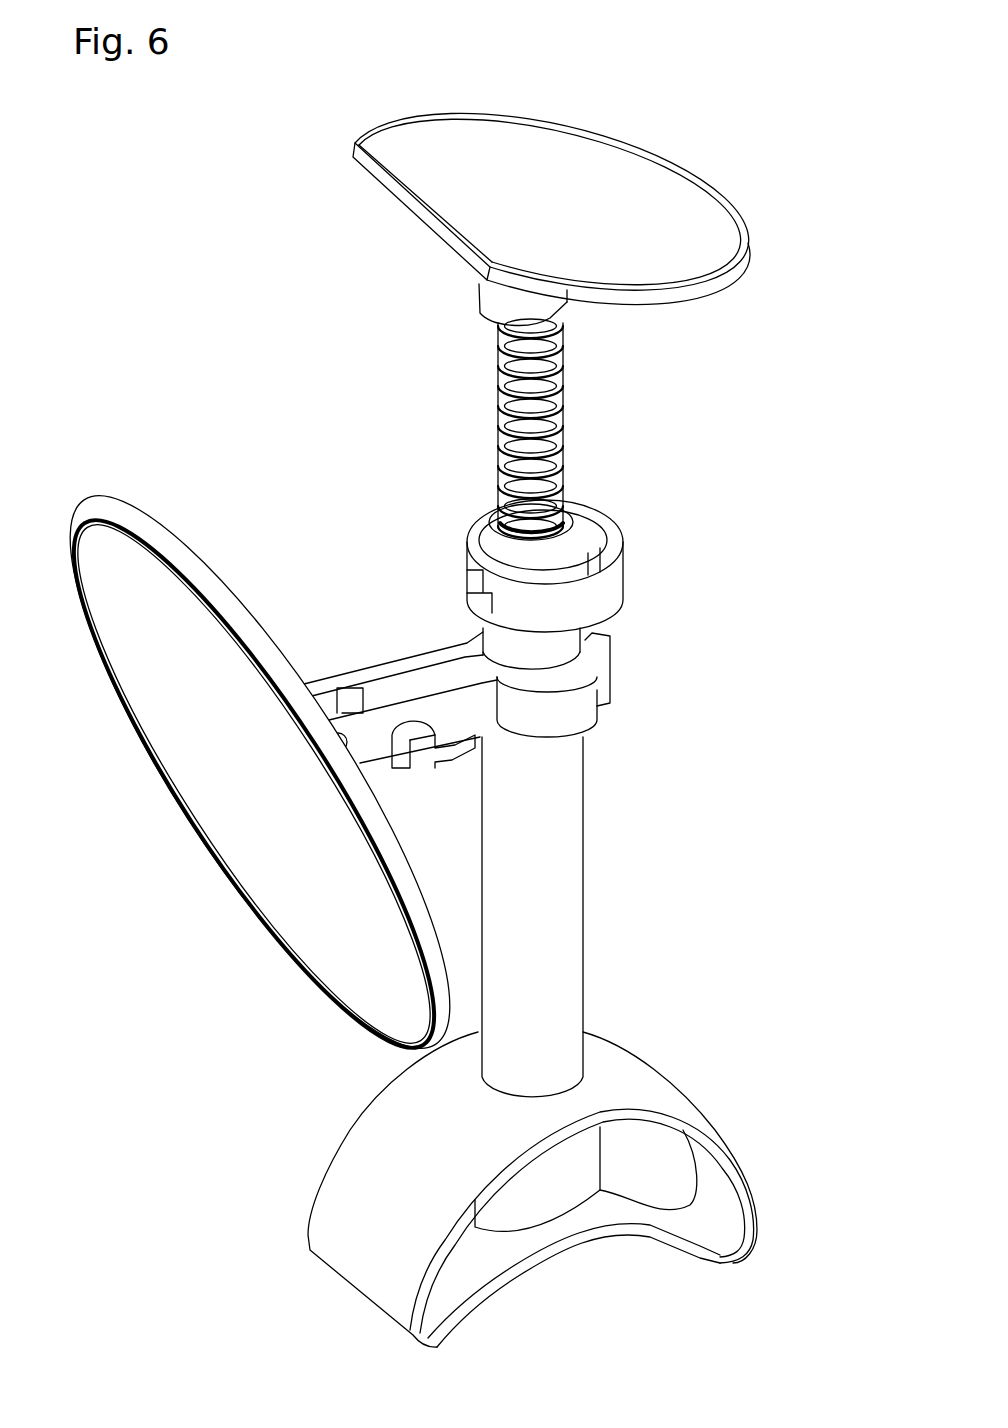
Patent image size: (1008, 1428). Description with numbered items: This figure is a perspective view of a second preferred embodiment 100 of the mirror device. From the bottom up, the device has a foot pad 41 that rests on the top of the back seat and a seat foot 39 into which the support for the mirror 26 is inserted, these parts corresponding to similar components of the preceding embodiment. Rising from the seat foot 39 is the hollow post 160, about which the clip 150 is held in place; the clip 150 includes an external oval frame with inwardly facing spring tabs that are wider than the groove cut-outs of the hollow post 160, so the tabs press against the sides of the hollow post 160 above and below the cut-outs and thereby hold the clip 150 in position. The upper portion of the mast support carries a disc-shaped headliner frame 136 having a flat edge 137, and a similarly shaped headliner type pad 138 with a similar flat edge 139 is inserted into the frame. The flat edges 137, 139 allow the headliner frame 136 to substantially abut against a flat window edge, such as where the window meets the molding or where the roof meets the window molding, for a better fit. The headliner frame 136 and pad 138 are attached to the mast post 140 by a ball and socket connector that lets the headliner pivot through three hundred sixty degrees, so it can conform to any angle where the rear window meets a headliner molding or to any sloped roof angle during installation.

The second preferred embodiment 100 is at (148, 283).
The headliner type pad 138 is at (660, 217).
The flat edge 139 is at (425, 200).
The flat edge 137 is at (430, 233).
The headliner frame 136 is at (703, 300).
The mast post 140 is at (568, 433).
The clip 150 is at (590, 602).
The hollow post 160 is at (540, 890).
The mirror 26 is at (203, 737).
The seat foot 39 is at (643, 1097).
The foot pad 41 is at (657, 1247).